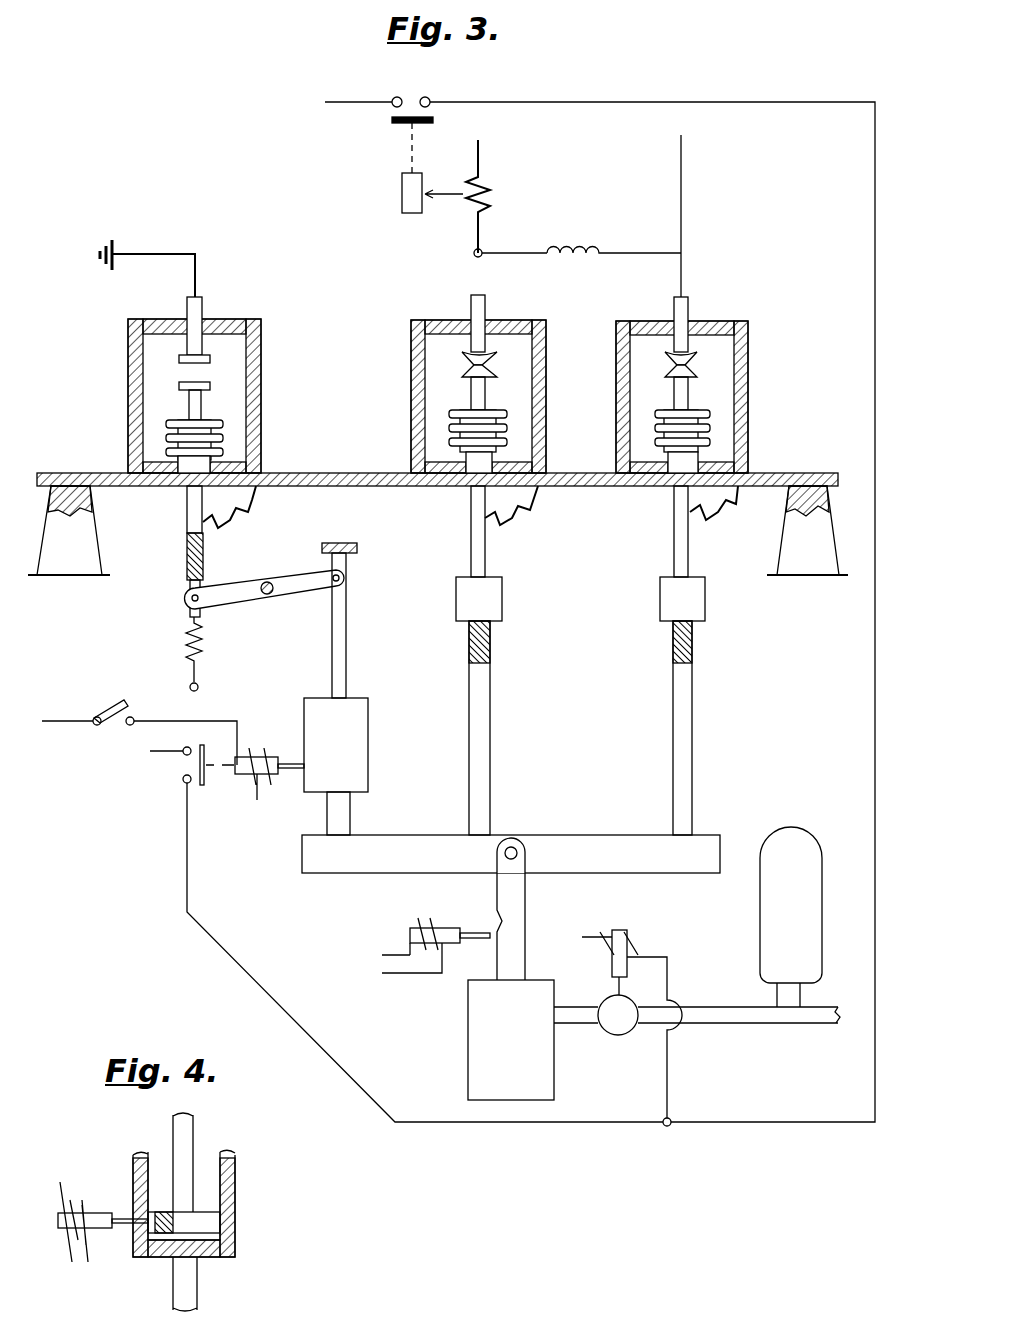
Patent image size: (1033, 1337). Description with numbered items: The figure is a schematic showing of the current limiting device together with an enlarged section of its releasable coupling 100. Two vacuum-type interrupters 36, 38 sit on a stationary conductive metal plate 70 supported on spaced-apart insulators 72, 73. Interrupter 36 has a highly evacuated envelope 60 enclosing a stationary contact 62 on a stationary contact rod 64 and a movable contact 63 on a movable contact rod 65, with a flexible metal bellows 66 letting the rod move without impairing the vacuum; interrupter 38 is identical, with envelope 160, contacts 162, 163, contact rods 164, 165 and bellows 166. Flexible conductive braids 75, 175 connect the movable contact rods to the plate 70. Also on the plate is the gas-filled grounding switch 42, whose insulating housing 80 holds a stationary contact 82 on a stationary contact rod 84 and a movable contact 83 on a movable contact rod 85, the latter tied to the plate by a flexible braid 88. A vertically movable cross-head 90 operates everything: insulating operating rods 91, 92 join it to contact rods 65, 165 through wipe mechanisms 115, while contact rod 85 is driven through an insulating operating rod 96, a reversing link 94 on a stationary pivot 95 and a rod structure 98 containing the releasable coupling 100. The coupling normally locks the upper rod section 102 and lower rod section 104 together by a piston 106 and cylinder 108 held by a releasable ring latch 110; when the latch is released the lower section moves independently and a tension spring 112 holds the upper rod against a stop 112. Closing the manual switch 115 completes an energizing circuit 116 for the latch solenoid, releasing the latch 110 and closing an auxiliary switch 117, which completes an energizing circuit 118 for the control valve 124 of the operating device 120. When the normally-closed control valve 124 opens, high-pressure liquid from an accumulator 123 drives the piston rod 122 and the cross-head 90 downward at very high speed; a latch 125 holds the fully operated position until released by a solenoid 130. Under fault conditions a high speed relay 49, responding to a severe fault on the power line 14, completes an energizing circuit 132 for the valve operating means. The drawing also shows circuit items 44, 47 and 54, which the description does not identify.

In FIG. 3, the power line 14 is at (681, 195).
In FIG. 3, the interrupter 36 is at (459, 396).
In FIG. 3, the interrupter 38 is at (709, 397).
In FIG. 3, the grounding switch 42 is at (161, 396).
In FIG. 3, the ground lead 44 is at (154, 253).
In FIG. 3, the resistor 47 is at (490, 190).
In FIG. 3, the high speed relay 49 is at (402, 186).
In FIG. 3, the inductor coil 54 is at (590, 245).
In FIG. 3, the evacuated envelope 60 is at (411, 409).
In FIG. 3, the stationary contact 62 is at (494, 356).
In FIG. 3, the movable contact 63 is at (490, 372).
In FIG. 3, the stationary contact rod 64 is at (485, 305).
In FIG. 3, the movable contact rod 65 is at (470, 392).
In FIG. 3, the flexible metal bellows 66 is at (507, 430).
In FIG. 3, the conductive metal plate 70 is at (594, 488).
In FIG. 3, the insulator 72 is at (60, 540).
In FIG. 3, the insulator 73 is at (822, 540).
In FIG. 3, the flexible conductive braid 75 is at (530, 520).
In FIG. 3, the insulating housing 80 is at (128, 428).
In FIG. 3, the stationary contact 82 is at (210, 359).
In FIG. 3, the movable contact 83 is at (210, 386).
In FIG. 3, the stationary contact rod 84 is at (200, 308).
In FIG. 3, the movable contact rod 85 is at (187, 508).
In FIG. 3, the flexible braid 88 is at (250, 514).
In FIG. 3, the cross-head 90 is at (580, 835).
In FIG. 3, the insulating operating rod 91 is at (490, 700).
In FIG. 3, the insulating operating rod 92 is at (692, 700).
In FIG. 3, the reversing link 94 is at (243, 600).
In FIG. 3, the stationary pivot 95 is at (268, 582).
In FIG. 3, the insulating operating rod 96 is at (187, 558).
In FIG. 3, the rod structure 98 is at (367, 728).
In FIG. 3, the releasable coupling 100 is at (368, 750).
In FIG. 4, the releasable coupling 100 is at (217, 1226).
In FIG. 3, the upper rod section 102 is at (346, 629).
In FIG. 4, the upper rod section 102 is at (180, 1135).
In FIG. 3, the lower rod section 104 is at (350, 815).
In FIG. 4, the lower rod section 104 is at (180, 1293).
In FIG. 4, the piston 106 is at (210, 1222).
In FIG. 4, the cylinder 108 is at (235, 1178).
In FIG. 3, the releasable latch 110 is at (260, 752).
In FIG. 4, the releasable latch 110 is at (58, 1235).
In FIG. 3, the tension spring and stop 112 is at (340, 543).
In FIG. 3, the wipe mechanism and manual switch 115 is at (110, 710).
In FIG. 3, the energizing circuit 116 is at (163, 721).
In FIG. 3, the auxiliary switch 117 is at (206, 786).
In FIG. 3, the energizing circuit 118 is at (215, 945).
In FIG. 3, the operating device 120 is at (480, 1045).
In FIG. 3, the piston rod 122 is at (525, 950).
In FIG. 3, the accumulator 123 is at (760, 925).
In FIG. 3, the control valve 124 is at (616, 1035).
In FIG. 3, the latch 125 is at (496, 912).
In FIG. 3, the solenoid 130 is at (410, 928).
In FIG. 3, the energizing circuit 132 is at (875, 100).
In FIG. 3, the evacuated envelope 160 is at (748, 409).
In FIG. 3, the stationary contact 162 is at (665, 356).
In FIG. 3, the movable contact 163 is at (668, 372).
In FIG. 3, the stationary contact rod 164 is at (688, 305).
In FIG. 3, the movable contact rod 165 is at (688, 392).
In FIG. 3, the flexible metal bellows 166 is at (710, 432).
In FIG. 3, the flexible conductive braid 175 is at (728, 520).